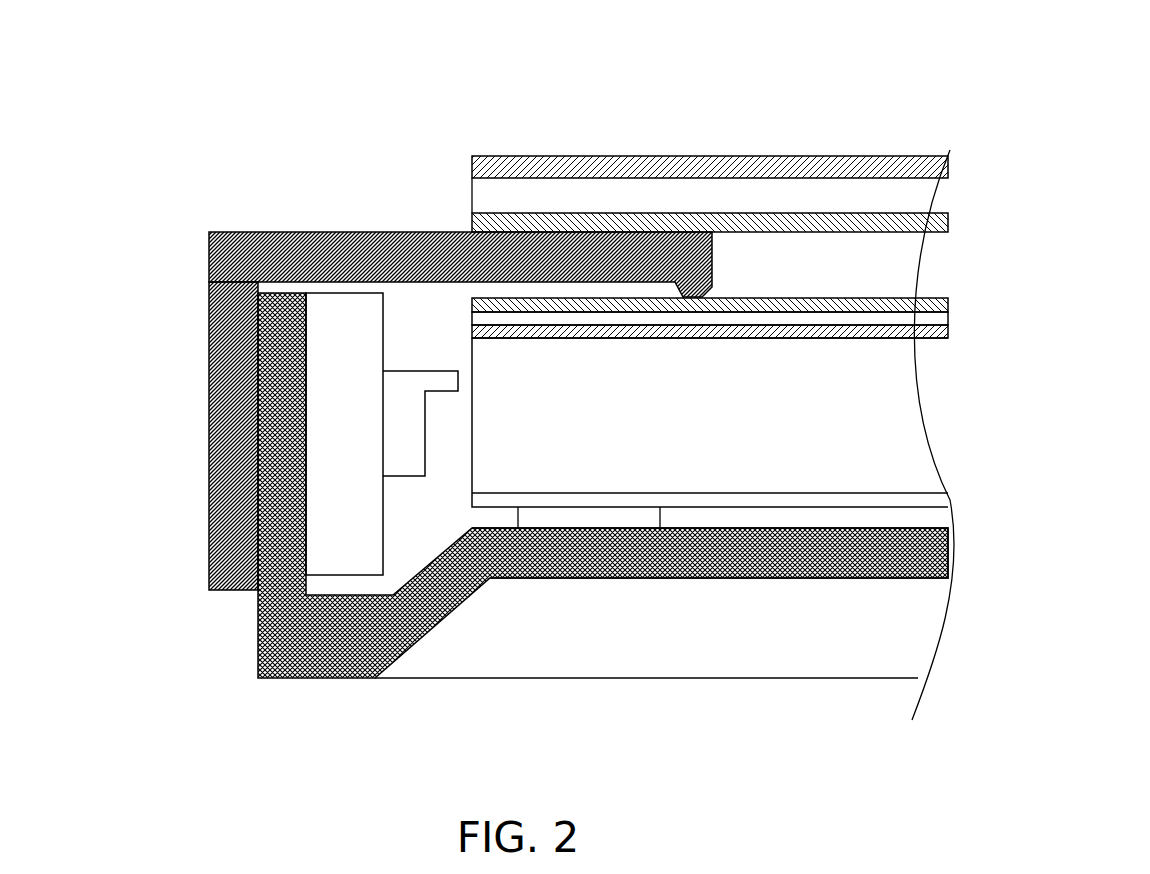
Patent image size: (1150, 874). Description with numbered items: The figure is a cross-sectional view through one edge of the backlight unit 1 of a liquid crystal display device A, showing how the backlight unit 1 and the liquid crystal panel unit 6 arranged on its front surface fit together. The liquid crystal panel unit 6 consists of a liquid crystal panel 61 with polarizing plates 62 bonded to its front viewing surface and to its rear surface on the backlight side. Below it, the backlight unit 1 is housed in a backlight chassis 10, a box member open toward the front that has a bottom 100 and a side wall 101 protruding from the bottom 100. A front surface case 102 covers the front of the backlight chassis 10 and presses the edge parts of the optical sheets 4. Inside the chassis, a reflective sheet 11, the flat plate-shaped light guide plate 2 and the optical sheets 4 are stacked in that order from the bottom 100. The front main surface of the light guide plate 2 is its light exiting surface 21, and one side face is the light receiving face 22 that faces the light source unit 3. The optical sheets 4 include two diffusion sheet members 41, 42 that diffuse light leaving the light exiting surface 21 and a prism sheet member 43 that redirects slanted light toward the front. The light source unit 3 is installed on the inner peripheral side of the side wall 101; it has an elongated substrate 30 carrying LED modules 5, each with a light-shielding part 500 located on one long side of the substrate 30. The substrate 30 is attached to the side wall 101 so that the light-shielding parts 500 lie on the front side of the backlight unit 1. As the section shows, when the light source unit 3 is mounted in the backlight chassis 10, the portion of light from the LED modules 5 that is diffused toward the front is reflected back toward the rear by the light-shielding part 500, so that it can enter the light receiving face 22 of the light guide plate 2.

The liquid crystal display device A is at (242, 108).
The backlight unit 1 is at (160, 240).
The light guide plate 2 is at (897, 418).
The light source unit 3 is at (317, 331).
The optical sheets 4 is at (1065, 272).
The LED module 5 is at (395, 460).
The liquid crystal panel unit 6 is at (350, 78).
The backlight chassis 10 is at (258, 678).
The reflective sheet 11 is at (935, 497).
The light exiting surface 21 is at (733, 330).
The light receiving face 22 is at (470, 428).
The substrate 30 is at (337, 372).
The diffusion sheet member 41 is at (908, 328).
The diffusion sheet member 42 is at (908, 305).
The prism sheet member 43 is at (908, 316).
The liquid crystal panel 61 is at (486, 200).
The polarizing plate 62 is at (472, 168).
The bottom 100 is at (630, 560).
The side wall 101 is at (262, 510).
The front surface case 102 is at (270, 250).
The light-shielding part 500 is at (447, 385).